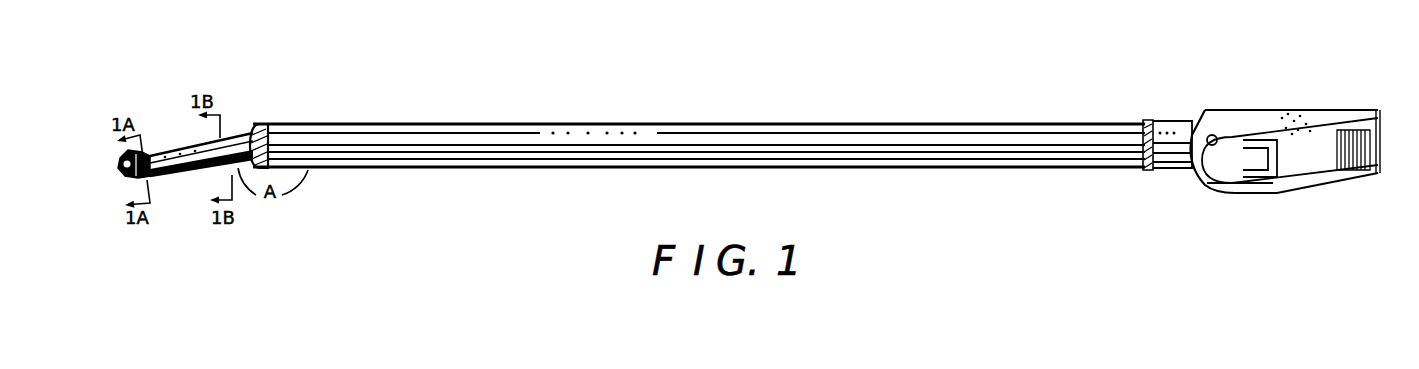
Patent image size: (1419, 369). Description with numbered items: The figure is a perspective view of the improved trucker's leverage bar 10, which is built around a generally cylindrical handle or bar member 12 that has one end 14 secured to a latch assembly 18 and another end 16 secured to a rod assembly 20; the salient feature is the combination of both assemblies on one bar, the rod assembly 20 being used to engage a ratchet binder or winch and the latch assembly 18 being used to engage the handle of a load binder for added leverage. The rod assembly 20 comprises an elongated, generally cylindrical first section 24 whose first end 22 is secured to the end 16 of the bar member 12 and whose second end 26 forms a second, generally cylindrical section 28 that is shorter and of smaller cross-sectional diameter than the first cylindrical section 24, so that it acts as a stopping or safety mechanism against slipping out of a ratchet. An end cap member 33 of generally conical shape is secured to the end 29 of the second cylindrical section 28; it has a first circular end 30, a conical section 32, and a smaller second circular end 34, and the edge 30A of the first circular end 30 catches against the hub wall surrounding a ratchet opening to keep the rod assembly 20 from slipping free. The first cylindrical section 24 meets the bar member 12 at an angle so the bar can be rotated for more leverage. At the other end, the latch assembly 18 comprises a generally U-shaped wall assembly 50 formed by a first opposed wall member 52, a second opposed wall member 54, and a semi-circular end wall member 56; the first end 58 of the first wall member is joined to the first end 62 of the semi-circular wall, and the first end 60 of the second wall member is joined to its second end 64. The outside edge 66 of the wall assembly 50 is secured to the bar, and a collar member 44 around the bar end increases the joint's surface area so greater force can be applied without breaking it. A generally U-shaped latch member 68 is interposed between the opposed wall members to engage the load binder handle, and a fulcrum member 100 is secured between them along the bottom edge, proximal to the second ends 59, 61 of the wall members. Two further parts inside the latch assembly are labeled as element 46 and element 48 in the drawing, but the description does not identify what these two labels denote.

The leverage bar 10 is at (749, 111).
The bar member 12 is at (928, 124).
The end of bar member 14 is at (1147, 120).
The end of bar member 16 is at (270, 125).
The latch assembly 18 is at (1319, 99).
The rod assembly 20 is at (231, 127).
The first end of first section 22 is at (260, 122).
The first cylindrical section 24 is at (173, 147).
The second end of first section 26 is at (148, 157).
The second cylindrical section 28 is at (150, 180).
The end of second cylindrical section 29 is at (123, 180).
The first circular end 30 is at (128, 157).
The edge of first circular end 30A is at (120, 167).
The conical section 32 is at (123, 160).
The end cap member 33 is at (120, 183).
The second circular end 34 is at (120, 189).
The collar member 44 is at (1170, 173).
The spring 46 is at (1317, 148).
The slide block 48 is at (1293, 153).
The U-shaped wall assembly 50 is at (1290, 97).
The first opposed wall member 52 is at (1377, 107).
The second opposed wall member 54 is at (1350, 187).
The semi-circular end wall member 56 is at (1218, 140).
The first end of first opposed wall member 58 is at (1232, 138).
The second end of first opposed wall member 59 is at (1387, 118).
The first end of second opposed wall member 60 is at (1227, 193).
The second end of second opposed wall member 61 is at (1377, 173).
The first end of semi-circular wall 62 is at (1214, 135).
The second end of semi-circular wall 64 is at (1220, 193).
The outside edge of wall assembly 66 is at (1220, 112).
The latch member 68 is at (1197, 180).
The fulcrum member 100 is at (1380, 177).